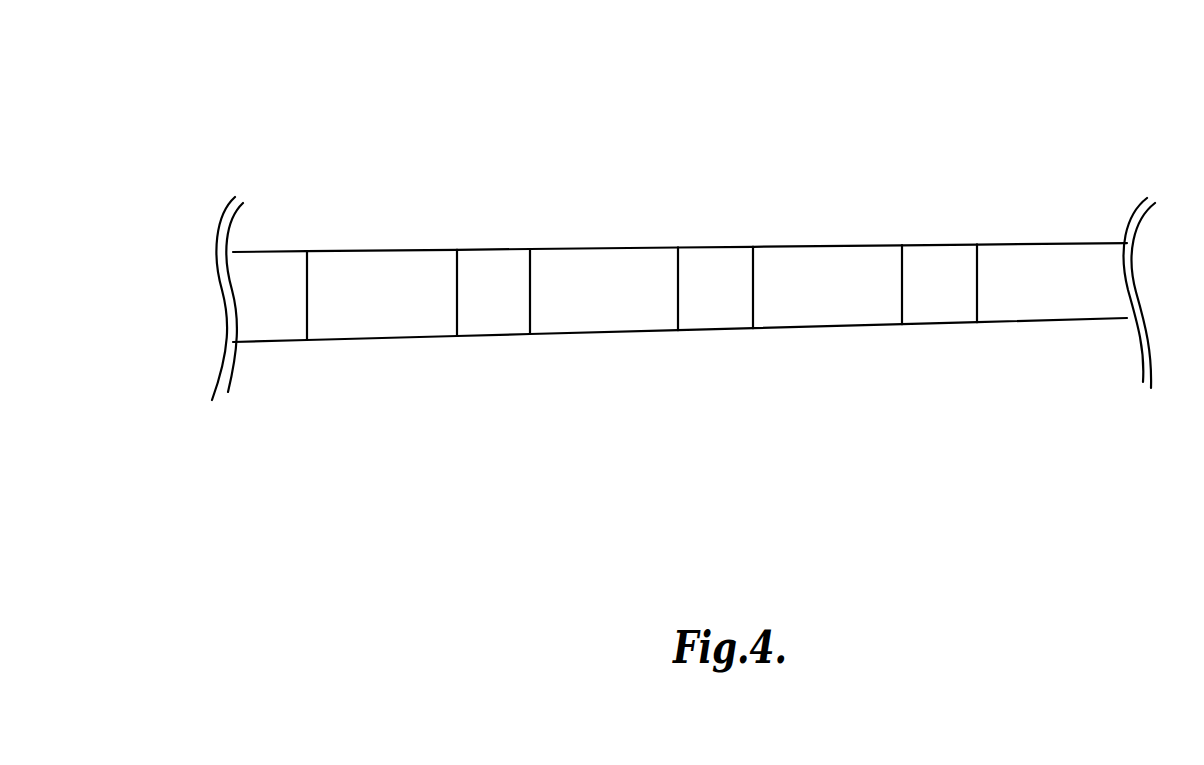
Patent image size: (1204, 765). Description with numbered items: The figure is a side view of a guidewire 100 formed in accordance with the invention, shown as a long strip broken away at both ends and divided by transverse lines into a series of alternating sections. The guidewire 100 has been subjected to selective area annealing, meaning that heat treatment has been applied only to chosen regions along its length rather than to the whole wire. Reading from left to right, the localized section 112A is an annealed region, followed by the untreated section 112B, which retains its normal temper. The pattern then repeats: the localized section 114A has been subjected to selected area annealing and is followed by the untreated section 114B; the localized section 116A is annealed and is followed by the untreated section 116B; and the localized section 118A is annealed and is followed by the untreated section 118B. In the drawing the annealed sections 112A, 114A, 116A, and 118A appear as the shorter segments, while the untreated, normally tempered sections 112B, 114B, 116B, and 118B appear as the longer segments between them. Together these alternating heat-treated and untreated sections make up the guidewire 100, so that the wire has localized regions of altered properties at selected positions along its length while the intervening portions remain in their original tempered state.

The guidewire 100 is at (1050, 138).
The localized section 112A is at (278, 341).
The untreated section 112B is at (383, 338).
The localized section 114A is at (495, 335).
The untreated section 114B is at (603, 332).
The localized section 116A is at (712, 329).
The untreated section 116B is at (822, 326).
The localized section 118A is at (938, 323).
The untreated section 118B is at (1043, 320).